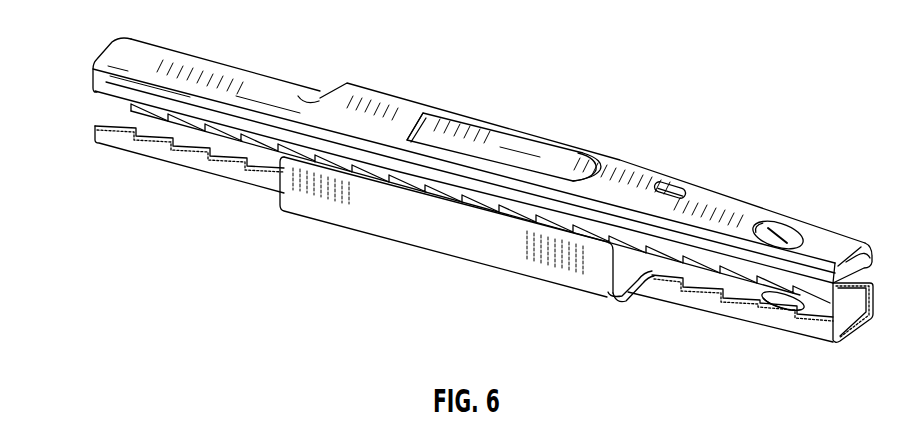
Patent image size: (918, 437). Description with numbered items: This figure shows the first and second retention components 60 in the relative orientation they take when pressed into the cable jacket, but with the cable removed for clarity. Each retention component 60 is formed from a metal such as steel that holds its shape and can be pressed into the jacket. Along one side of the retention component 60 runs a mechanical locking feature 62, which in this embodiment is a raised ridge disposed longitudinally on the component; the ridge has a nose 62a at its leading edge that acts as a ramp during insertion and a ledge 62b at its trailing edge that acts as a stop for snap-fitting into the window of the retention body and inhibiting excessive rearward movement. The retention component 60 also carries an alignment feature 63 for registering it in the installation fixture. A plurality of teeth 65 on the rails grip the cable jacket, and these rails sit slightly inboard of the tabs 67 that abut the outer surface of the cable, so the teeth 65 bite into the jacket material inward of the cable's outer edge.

The retention component 60 is at (672, 173).
The mechanical locking feature 62 is at (500, 150).
The nose 62a is at (603, 168).
The ledge 62b is at (407, 127).
The alignment feature 63 is at (786, 298).
The teeth 65 is at (132, 107).
The tabs 67 is at (493, 258).